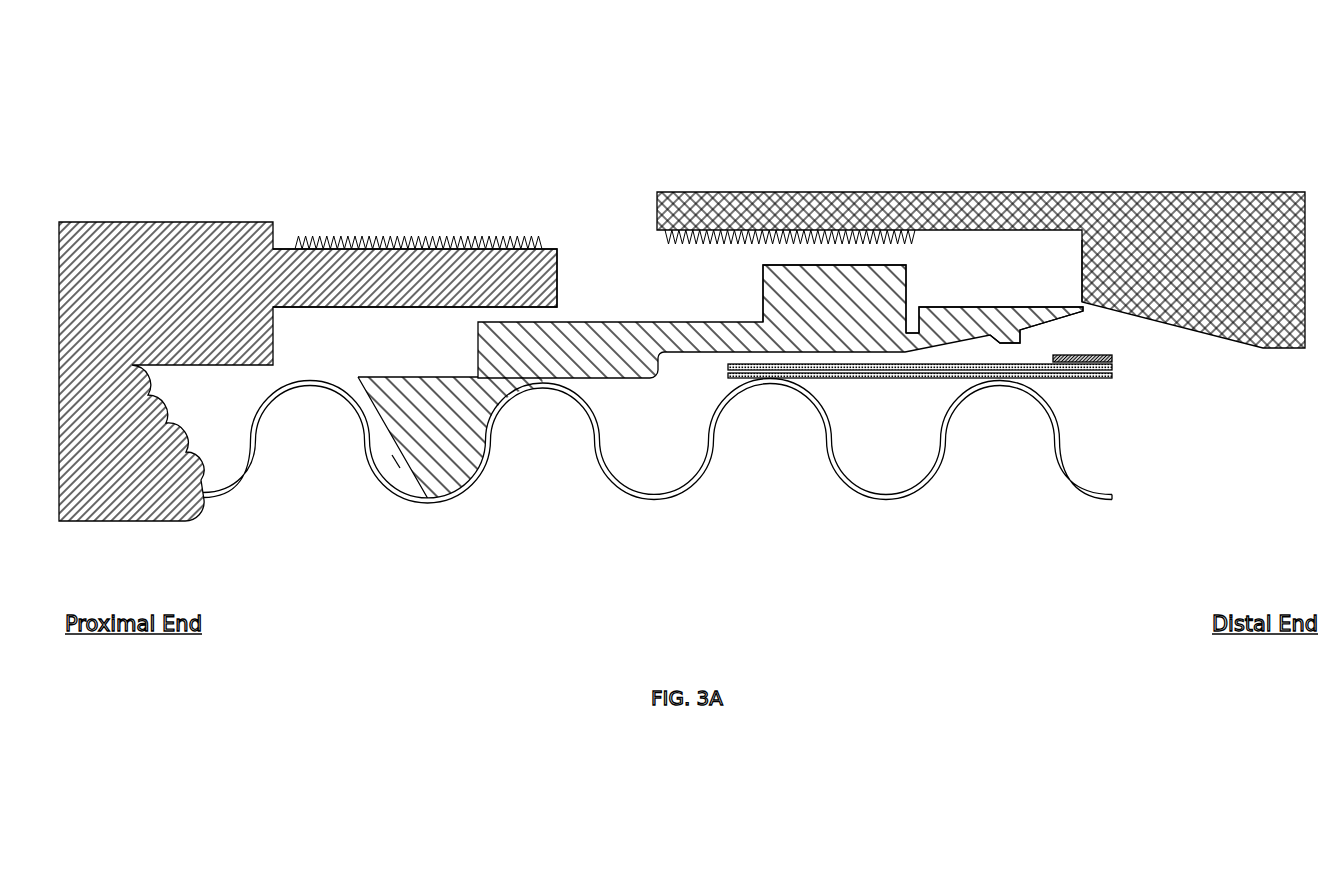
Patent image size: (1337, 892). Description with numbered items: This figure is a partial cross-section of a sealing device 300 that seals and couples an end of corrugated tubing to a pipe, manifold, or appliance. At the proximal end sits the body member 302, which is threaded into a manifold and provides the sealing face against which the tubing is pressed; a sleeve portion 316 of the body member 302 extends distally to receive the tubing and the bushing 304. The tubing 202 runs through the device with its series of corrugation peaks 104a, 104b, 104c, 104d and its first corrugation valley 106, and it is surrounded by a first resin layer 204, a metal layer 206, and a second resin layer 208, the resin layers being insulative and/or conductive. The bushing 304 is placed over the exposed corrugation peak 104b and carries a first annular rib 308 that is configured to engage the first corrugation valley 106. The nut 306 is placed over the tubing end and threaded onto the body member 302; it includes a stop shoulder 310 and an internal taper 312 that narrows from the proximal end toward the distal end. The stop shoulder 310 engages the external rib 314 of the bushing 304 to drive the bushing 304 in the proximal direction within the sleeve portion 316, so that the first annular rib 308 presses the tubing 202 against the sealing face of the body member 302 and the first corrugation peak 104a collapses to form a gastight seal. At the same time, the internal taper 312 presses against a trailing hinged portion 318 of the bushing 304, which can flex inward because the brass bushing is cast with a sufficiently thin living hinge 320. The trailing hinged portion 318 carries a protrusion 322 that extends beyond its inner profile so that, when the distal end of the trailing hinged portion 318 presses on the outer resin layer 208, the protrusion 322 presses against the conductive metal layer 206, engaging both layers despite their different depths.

The sealing device 300 is at (1254, 113).
The body member 302 is at (132, 522).
The bushing 304 is at (622, 322).
The nut 306 is at (1197, 192).
The first annular rib 308 is at (458, 438).
The stop shoulder 310 is at (1082, 268).
The internal taper 312 is at (1082, 312).
The external rib 314 is at (907, 282).
The sleeve portion 316 is at (343, 307).
The trailing hinged portion 318 is at (992, 307).
The living hinge 320 is at (913, 345).
The protrusion 322 is at (1020, 332).
The tubing 202 is at (1115, 497).
The first resin layer 204 is at (1113, 378).
The metal layer 206 is at (1115, 372).
The second resin layer 208 is at (1115, 361).
The first corrugation peak 104a is at (315, 384).
The exposed corrugation peak 104b is at (550, 383).
The corrugation peak 104c is at (780, 383).
The corrugation peak 104d is at (1012, 386).
The corrugation valley 106 is at (393, 458).